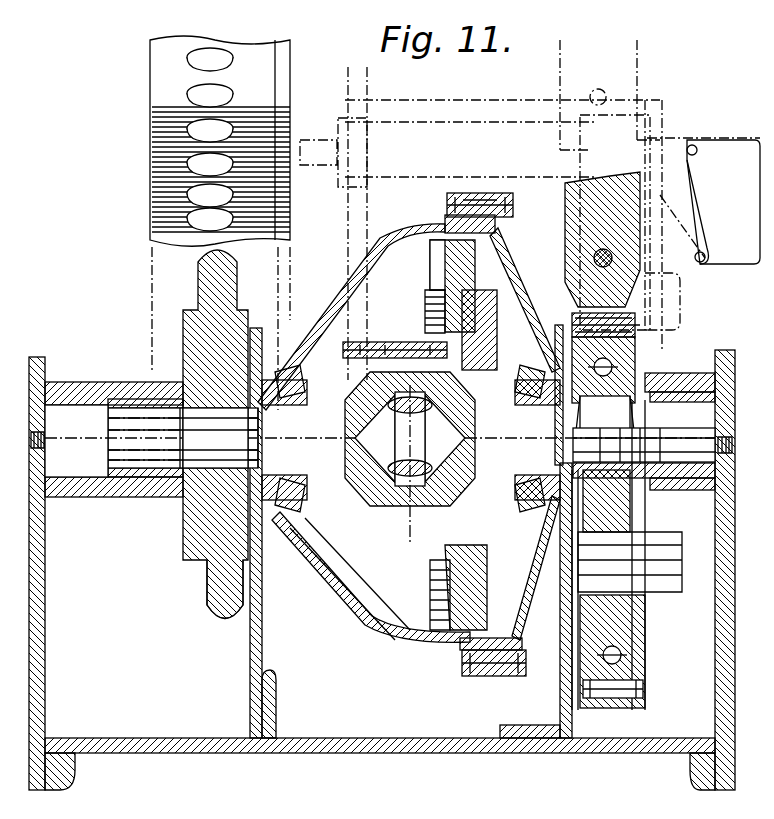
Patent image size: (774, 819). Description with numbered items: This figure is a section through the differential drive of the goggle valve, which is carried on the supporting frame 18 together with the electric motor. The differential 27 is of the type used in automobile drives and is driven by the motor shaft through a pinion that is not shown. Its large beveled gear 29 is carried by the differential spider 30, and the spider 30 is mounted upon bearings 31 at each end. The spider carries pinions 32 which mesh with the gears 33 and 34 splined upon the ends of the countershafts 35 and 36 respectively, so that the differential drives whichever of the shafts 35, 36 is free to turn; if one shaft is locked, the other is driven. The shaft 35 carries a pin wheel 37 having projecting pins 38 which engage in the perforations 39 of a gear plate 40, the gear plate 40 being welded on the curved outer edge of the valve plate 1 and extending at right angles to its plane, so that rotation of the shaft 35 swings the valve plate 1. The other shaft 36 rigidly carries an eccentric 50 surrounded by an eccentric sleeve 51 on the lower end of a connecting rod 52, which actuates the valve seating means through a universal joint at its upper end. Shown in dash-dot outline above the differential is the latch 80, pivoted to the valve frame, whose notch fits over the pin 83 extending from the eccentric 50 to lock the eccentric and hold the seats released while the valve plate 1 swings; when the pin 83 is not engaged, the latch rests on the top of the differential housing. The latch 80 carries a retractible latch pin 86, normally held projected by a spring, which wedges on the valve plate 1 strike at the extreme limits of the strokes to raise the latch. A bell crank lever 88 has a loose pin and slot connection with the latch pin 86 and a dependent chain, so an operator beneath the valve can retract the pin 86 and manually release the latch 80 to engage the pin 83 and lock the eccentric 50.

The valve plate 1 is at (280, 52).
The supporting frame 18 is at (138, 748).
The differential 27 is at (344, 590).
The large beveled gear 29 is at (438, 272).
The differential spider 30 is at (460, 352).
The bearings 31 is at (290, 380).
The pinions 32 is at (332, 490).
The gear 33 is at (367, 500).
The gear 34 is at (416, 520).
The countershaft 35 is at (152, 445).
The countershaft 36 is at (660, 388).
The pin wheel 37 is at (197, 543).
The projecting pins 38 is at (210, 602).
The perforations 39 is at (192, 60).
The gear plate 40 is at (162, 188).
The eccentric 50 is at (620, 512).
The eccentric sleeve 51 is at (640, 672).
The connecting rod 52 is at (580, 232).
The latch 80 is at (480, 100).
The pin 83 is at (652, 582).
The retractible latch pin 86 is at (314, 140).
The bell crank lever 88 is at (748, 262).